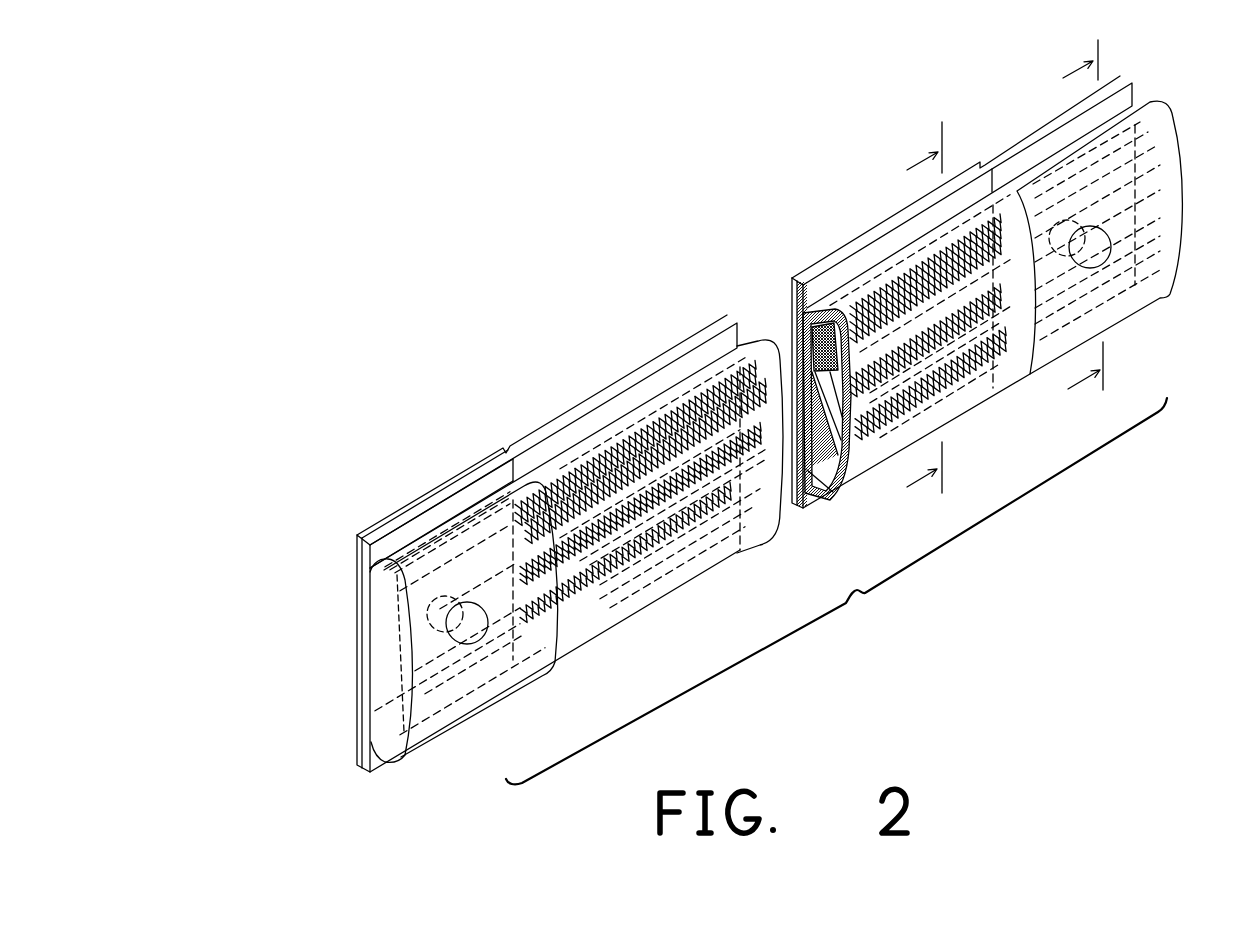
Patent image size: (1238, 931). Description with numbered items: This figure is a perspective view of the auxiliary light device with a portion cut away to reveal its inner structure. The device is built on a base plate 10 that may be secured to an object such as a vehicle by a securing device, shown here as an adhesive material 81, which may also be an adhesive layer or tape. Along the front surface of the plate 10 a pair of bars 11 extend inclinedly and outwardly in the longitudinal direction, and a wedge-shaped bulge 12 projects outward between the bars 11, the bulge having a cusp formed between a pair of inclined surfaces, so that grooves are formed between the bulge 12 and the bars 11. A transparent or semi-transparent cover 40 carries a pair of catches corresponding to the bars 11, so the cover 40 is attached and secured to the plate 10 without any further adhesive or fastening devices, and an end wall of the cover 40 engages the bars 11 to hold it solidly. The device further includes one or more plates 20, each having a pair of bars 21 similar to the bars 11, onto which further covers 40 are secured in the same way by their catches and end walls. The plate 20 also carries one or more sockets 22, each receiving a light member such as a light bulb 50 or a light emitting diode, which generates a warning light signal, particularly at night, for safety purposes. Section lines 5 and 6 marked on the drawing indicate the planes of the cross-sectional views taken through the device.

The plate 10 is at (608, 413).
The plate 20 is at (423, 527).
The adhesive material 81 is at (360, 533).
The cover 40 is at (423, 747).
The bars 21 is at (387, 560).
The sockets 22 is at (437, 613).
The light bulb 50 is at (463, 630).
The bars 11 is at (820, 494).
The bulge 12 is at (807, 388).
The section line 5- 5 is at (917, 323).
The section line 6- 6 is at (1075, 230).